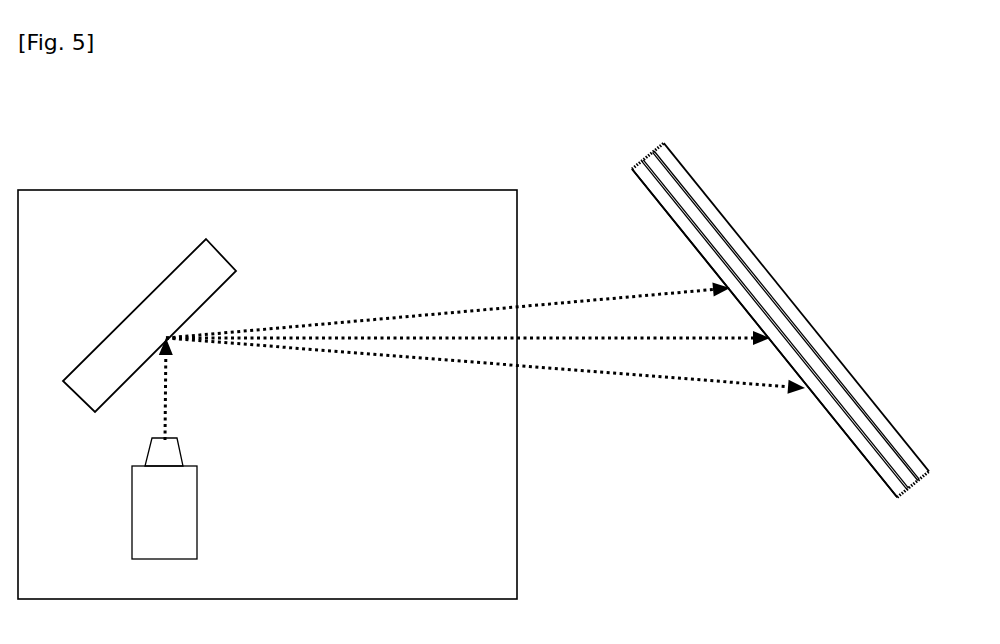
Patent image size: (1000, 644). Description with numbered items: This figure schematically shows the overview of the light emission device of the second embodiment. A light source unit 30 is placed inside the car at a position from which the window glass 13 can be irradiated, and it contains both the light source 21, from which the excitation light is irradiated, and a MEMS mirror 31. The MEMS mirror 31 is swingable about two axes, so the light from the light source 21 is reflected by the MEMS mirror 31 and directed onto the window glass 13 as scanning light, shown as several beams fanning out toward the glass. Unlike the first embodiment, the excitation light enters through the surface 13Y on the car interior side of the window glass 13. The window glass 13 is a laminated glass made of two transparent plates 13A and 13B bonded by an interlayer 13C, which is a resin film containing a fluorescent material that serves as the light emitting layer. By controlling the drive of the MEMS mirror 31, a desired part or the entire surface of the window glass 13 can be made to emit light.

The light source unit 30 is at (328, 185).
The MEMS mirror 31 is at (160, 293).
The light source 21 is at (192, 495).
The window glass 13 is at (786, 294).
The transparent plate 13A is at (633, 168).
The transparent plate 13B is at (682, 167).
The interlayer 13C is at (900, 467).
The surface on the car interior side 13Y is at (857, 447).